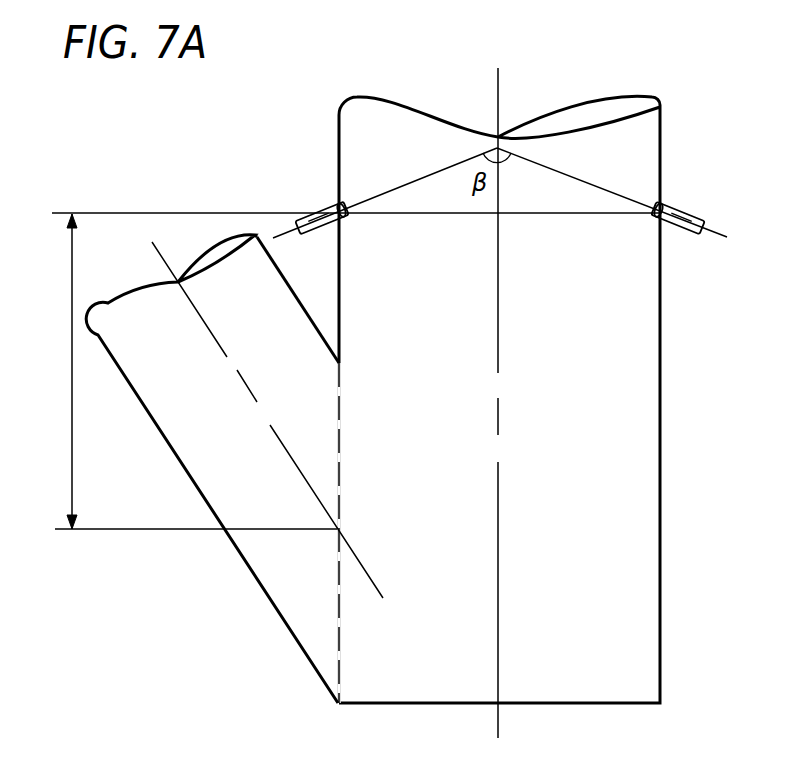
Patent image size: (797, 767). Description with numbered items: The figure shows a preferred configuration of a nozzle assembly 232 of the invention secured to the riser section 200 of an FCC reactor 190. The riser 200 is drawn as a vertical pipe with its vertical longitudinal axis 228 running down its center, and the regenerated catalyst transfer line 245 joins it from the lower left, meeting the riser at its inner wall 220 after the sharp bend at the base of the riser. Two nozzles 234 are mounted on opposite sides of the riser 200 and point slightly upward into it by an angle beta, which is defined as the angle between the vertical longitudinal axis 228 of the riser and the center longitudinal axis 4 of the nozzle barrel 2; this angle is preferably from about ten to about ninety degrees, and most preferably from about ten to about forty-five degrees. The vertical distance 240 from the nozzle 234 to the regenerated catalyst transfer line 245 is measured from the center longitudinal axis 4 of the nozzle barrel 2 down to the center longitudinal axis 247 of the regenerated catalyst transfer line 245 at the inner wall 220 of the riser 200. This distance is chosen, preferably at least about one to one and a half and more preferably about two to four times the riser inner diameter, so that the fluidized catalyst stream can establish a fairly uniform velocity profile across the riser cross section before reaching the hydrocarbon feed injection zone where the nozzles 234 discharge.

The FCC reactor 190 is at (677, 31).
The riser section 200 is at (662, 430).
The inner wall 220 is at (340, 322).
The vertical longitudinal axis 228 is at (500, 622).
The nozzle assembly 232 is at (300, 200).
The nozzle 234 is at (697, 234).
The vertical distance 240 is at (72, 440).
The regenerated catalyst transfer line 245 is at (265, 590).
The center longitudinal axis 247 is at (163, 265).
The nozzle barrel 2 is at (309, 229).
The center longitudinal axis 4 is at (278, 237).